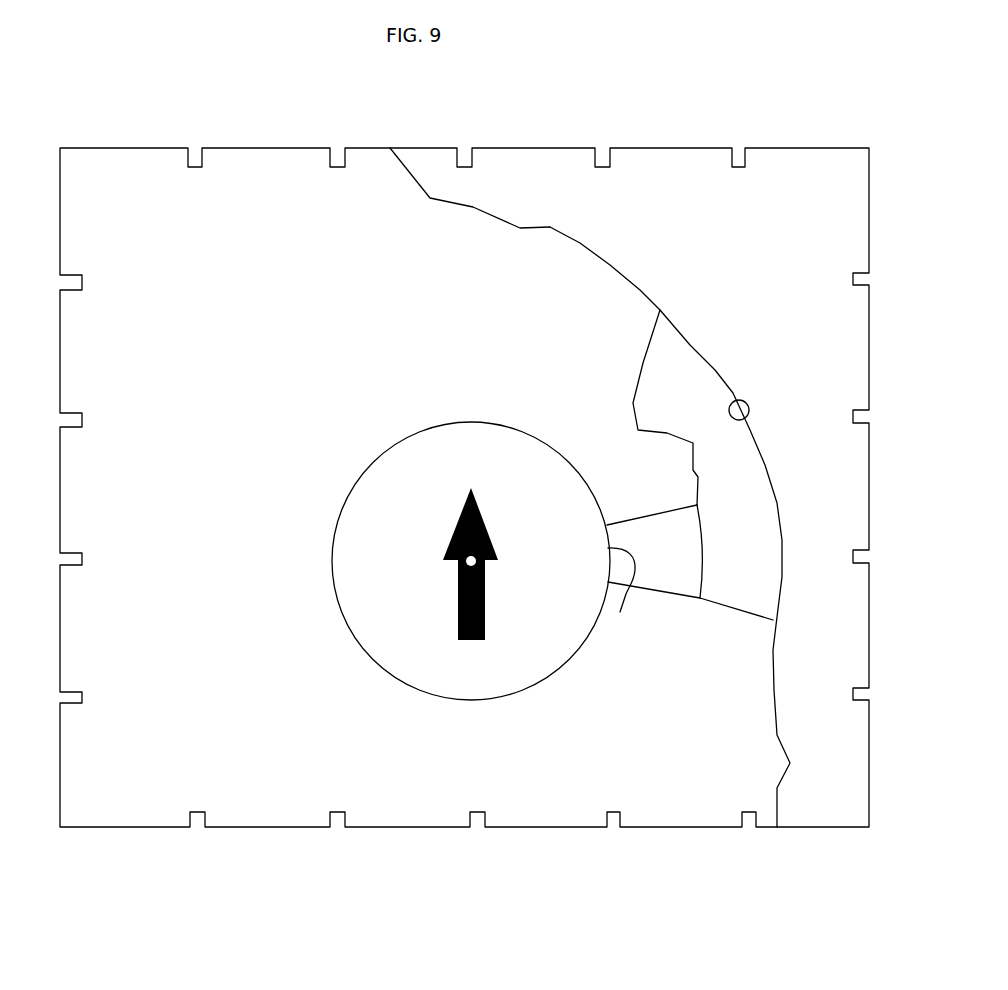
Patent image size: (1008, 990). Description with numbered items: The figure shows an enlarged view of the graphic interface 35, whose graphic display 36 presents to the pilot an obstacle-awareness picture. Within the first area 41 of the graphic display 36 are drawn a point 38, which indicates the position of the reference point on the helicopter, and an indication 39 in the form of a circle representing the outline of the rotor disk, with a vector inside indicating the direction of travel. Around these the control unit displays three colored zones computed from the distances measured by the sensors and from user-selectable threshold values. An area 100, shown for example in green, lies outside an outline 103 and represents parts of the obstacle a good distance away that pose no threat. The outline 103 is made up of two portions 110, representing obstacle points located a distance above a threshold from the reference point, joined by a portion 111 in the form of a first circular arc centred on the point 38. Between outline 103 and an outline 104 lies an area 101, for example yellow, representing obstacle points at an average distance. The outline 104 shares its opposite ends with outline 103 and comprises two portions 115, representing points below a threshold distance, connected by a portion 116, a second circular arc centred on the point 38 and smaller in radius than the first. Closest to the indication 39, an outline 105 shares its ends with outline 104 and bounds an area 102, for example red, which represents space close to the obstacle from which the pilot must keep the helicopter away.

The area 100 is at (752, 200).
The first area 41 is at (266, 182).
The graphic interface 35 is at (657, 135).
The graphic display 36 is at (171, 786).
The portions 110 is at (471, 208).
The outline 103 is at (558, 238).
The portions 115 is at (643, 363).
The portions 111 is at (742, 398).
The outline 104 is at (664, 439).
The area 102 is at (648, 523).
The portions 116 is at (703, 547).
The area 101 is at (730, 585).
The outline 105 is at (626, 593).
The indication 39 is at (388, 450).
The point 38 is at (463, 563).